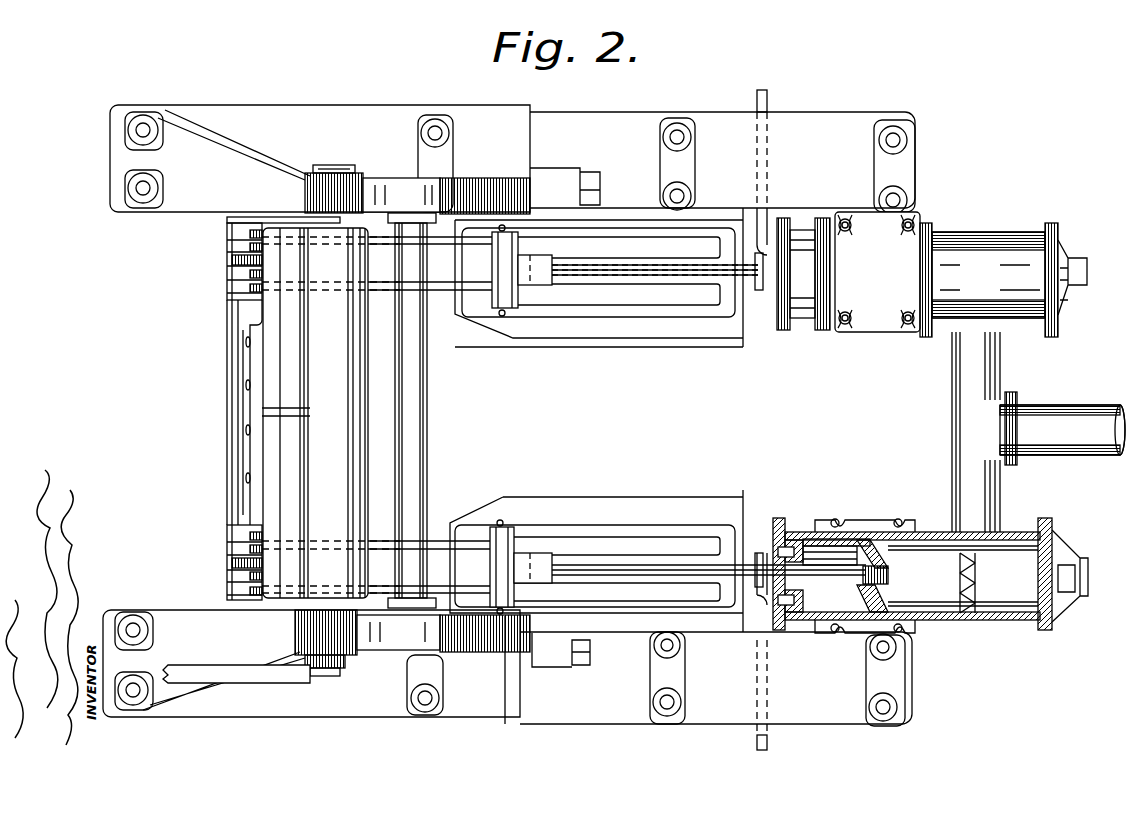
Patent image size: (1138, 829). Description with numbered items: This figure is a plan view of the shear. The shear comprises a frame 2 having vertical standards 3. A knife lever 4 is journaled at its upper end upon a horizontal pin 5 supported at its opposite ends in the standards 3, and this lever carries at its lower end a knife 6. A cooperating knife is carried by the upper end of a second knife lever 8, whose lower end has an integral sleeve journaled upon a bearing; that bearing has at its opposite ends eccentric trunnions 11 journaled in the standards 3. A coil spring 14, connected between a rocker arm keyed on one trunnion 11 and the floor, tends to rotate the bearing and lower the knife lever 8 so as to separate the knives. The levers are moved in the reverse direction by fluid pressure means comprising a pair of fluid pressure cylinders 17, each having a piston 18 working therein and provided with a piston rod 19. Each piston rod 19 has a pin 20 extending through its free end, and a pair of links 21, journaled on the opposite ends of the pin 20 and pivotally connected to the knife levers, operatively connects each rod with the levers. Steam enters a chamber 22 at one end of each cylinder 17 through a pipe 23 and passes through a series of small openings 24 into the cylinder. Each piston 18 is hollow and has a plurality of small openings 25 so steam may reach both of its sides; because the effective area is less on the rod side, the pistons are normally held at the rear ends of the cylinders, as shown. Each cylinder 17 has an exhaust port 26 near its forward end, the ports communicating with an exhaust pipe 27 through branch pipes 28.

The frame 2 is at (705, 219).
The vertical standards 3 is at (412, 414).
The knife lever 4 is at (264, 343).
The horizontal pin 5 is at (333, 172).
The knife 6 is at (245, 375).
The knife lever 8 is at (232, 258).
The eccentric trunnions 11 is at (337, 690).
The coil spring 14 is at (207, 672).
The fluid pressure cylinders 17 is at (965, 622).
The piston 18 is at (845, 535).
The piston rod 19 is at (655, 272).
The pin 20 is at (502, 312).
The links 21 is at (235, 240).
The chamber 22 is at (795, 535).
The pipe 23 is at (768, 100).
The small openings 24 is at (803, 570).
The small openings 25 is at (877, 556).
The exhaust port 26 is at (975, 590).
The exhaust pipe 27 is at (1098, 440).
The branch pipes 28 is at (995, 368).